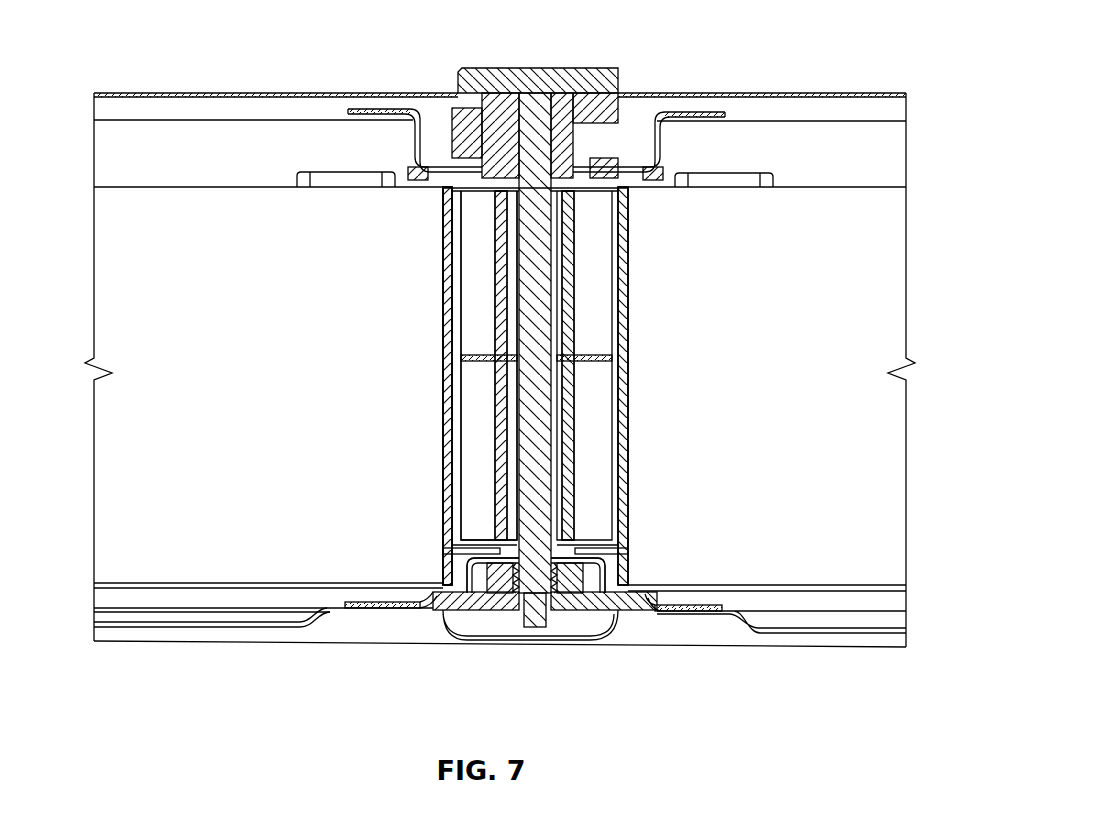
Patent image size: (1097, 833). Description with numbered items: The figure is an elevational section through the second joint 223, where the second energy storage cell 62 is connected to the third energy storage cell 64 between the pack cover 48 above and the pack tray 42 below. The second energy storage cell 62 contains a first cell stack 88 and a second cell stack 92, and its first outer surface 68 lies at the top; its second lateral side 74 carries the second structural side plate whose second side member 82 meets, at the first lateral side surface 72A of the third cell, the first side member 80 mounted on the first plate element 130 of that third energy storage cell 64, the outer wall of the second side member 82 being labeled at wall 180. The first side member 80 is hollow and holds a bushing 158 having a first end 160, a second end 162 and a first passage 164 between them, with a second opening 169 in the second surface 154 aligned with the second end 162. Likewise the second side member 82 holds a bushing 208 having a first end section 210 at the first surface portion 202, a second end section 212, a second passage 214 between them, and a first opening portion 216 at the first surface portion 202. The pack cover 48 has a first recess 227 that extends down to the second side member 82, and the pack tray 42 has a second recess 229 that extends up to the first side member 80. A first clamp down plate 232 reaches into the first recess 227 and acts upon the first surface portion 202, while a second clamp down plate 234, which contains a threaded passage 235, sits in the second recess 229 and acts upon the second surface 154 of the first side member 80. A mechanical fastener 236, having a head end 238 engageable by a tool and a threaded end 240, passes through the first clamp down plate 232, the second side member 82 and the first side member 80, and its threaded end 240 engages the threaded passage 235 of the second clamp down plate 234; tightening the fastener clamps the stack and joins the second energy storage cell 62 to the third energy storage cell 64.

The pack tray 42 is at (767, 631).
The pack cover 48 is at (222, 90).
The second energy storage cell 62 is at (90, 408).
The third energy storage cell 64 is at (908, 584).
The first outer surface 68 is at (875, 122).
The first lateral side surface 72A is at (628, 535).
The second lateral side 74 is at (452, 551).
The first side member 80 is at (430, 472).
The second side member 82 is at (629, 224).
The first cell stack 88 is at (900, 256).
The second cell stack 92 is at (152, 195).
The first plate element 130 is at (443, 455).
The second surface 154 is at (447, 610).
The bushing 158 is at (492, 452).
The first end 160 is at (568, 375).
The second end 162 is at (502, 525).
The first passage 164 is at (513, 402).
The second opening 169 is at (520, 557).
The outer tube wall 180 is at (625, 327).
The first surface portion 202 is at (555, 107).
The bushing 208 is at (572, 256).
The first end section 210 is at (452, 215).
The second end section 212 is at (505, 355).
The second passage 214 is at (515, 303).
The first opening portion 216 is at (560, 208).
The second joint 223 is at (400, 355).
The first recess 227 is at (440, 134).
The second recess 229 is at (460, 615).
The first clamp down plate 232 is at (620, 188).
The second clamp down plate 234 is at (487, 610).
The threaded passage 235 is at (543, 613).
The mechanical fastener 236 is at (495, 68).
The head end 238 is at (600, 82).
The threaded end 240 is at (570, 613).